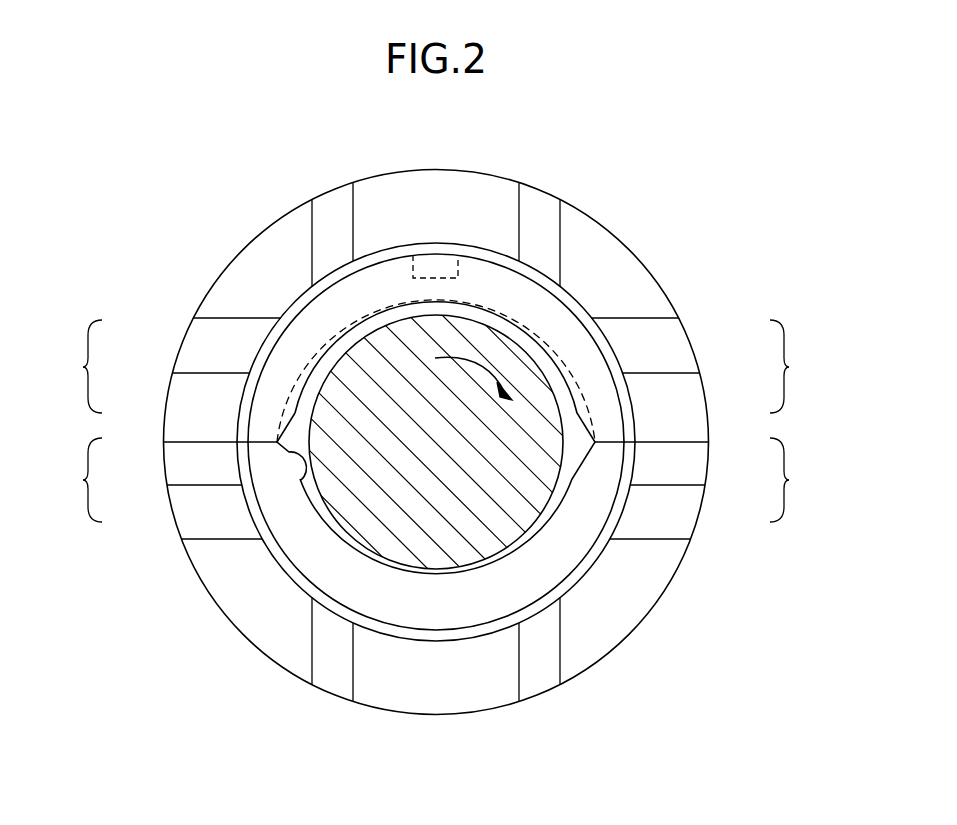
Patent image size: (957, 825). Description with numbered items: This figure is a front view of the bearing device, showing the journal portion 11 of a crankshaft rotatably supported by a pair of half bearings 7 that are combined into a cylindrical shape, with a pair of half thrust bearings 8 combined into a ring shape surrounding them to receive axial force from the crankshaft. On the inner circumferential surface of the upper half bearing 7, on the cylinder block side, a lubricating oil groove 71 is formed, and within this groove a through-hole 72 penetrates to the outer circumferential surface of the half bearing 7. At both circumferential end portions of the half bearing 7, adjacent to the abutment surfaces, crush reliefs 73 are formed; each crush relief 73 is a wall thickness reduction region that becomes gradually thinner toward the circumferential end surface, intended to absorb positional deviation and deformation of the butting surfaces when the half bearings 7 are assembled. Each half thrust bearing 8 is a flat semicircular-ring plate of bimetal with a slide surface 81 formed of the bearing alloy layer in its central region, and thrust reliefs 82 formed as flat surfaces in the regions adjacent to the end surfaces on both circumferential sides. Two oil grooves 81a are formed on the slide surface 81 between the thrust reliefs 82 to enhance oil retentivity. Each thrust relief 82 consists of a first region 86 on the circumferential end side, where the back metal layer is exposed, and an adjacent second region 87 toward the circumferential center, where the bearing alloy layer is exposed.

The half bearing 7 is at (308, 307).
The half thrust bearing 8 is at (596, 246).
The journal portion 11 is at (517, 510).
The lubricating oil groove 71 is at (283, 388).
The through-hole 72 is at (449, 268).
The crush relief 73 is at (302, 480).
The slide surface 81 is at (635, 283).
The oil groove 81a is at (330, 203).
The thrust relief 82 is at (436, 421).
The first region 86 is at (196, 412).
The second region 87 is at (196, 349).